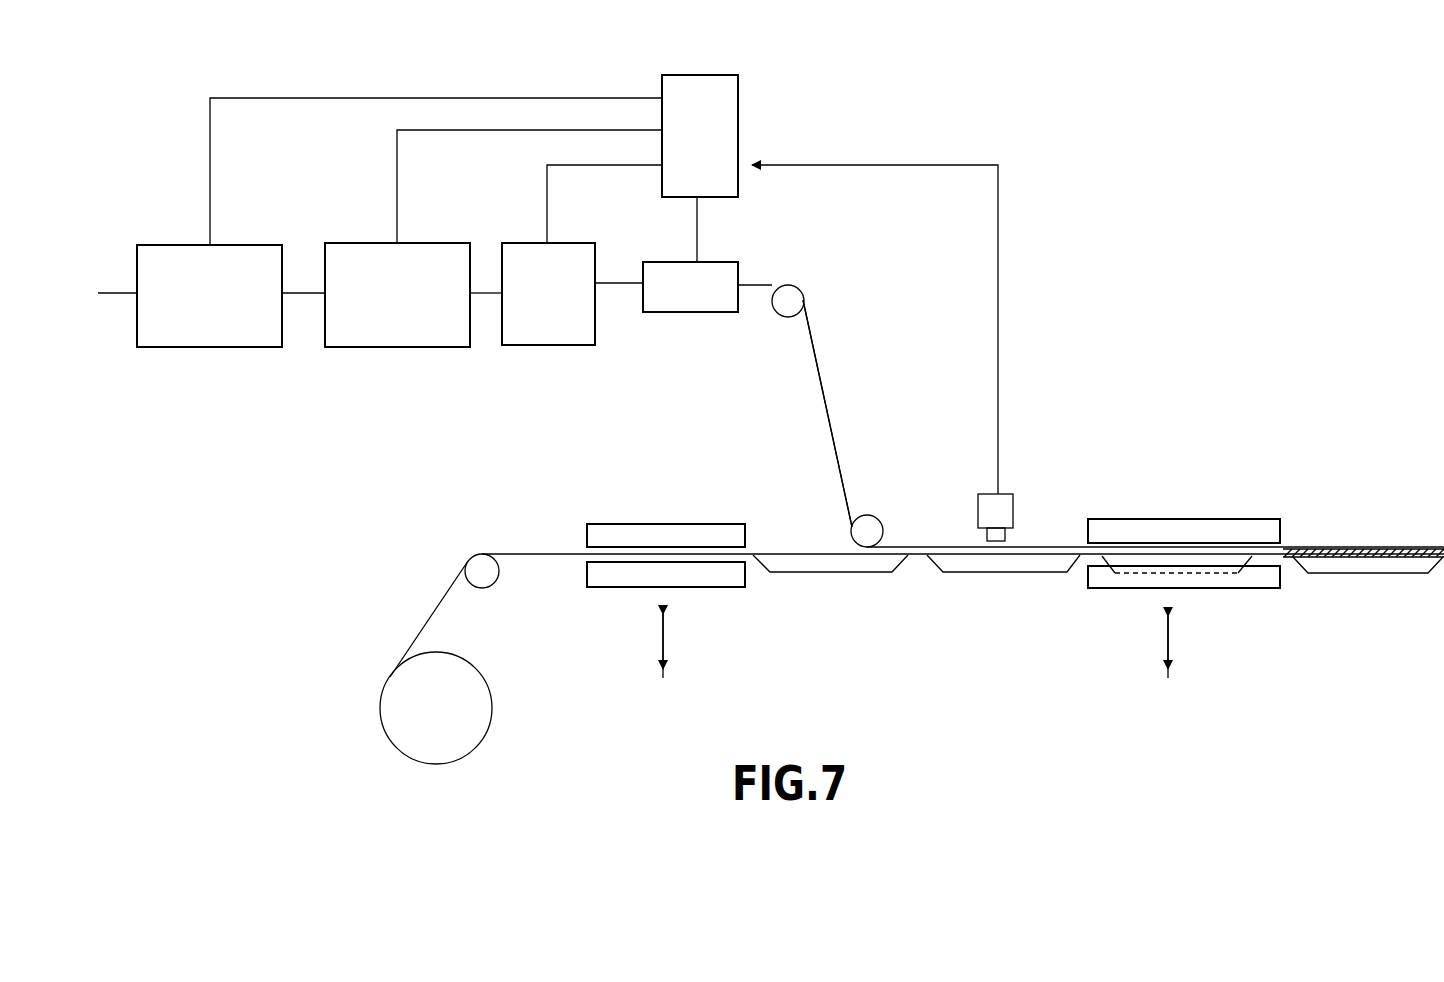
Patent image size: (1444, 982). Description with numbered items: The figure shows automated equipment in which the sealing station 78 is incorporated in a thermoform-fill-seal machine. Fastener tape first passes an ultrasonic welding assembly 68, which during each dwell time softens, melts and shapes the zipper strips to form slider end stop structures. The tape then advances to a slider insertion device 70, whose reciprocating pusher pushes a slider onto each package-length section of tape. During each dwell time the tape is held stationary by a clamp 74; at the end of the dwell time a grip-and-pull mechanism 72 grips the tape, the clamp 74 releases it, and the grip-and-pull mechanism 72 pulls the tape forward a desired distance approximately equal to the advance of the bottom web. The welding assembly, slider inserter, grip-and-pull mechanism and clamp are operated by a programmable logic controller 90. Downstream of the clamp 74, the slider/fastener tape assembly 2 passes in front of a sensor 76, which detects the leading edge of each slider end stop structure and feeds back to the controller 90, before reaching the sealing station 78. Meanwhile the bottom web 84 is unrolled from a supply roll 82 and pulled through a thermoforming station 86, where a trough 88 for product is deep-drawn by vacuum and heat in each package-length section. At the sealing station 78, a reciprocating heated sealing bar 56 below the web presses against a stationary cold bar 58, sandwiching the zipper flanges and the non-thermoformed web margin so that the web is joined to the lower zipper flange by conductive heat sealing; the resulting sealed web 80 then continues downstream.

The ultrasonic welding assembly 68 is at (167, 243).
The slider insertion device 70 is at (352, 243).
The grip-and-pull mechanism 72 is at (530, 243).
The clamp 74 is at (660, 262).
The programmable logic controller (PLC) 90 is at (700, 75).
The slider/fastener tape assembly 2 is at (830, 423).
The sensor 76 is at (1013, 508).
The bottom web 84 is at (438, 607).
The supply roll 82 is at (487, 730).
The thermoforming station 86 is at (695, 605).
The trough 88 is at (795, 572).
The cold bar 58 is at (1205, 528).
The heated sealing bar 56 is at (1222, 582).
The sealed web 80 is at (1357, 550).
The sealing station 78 is at (1112, 640).